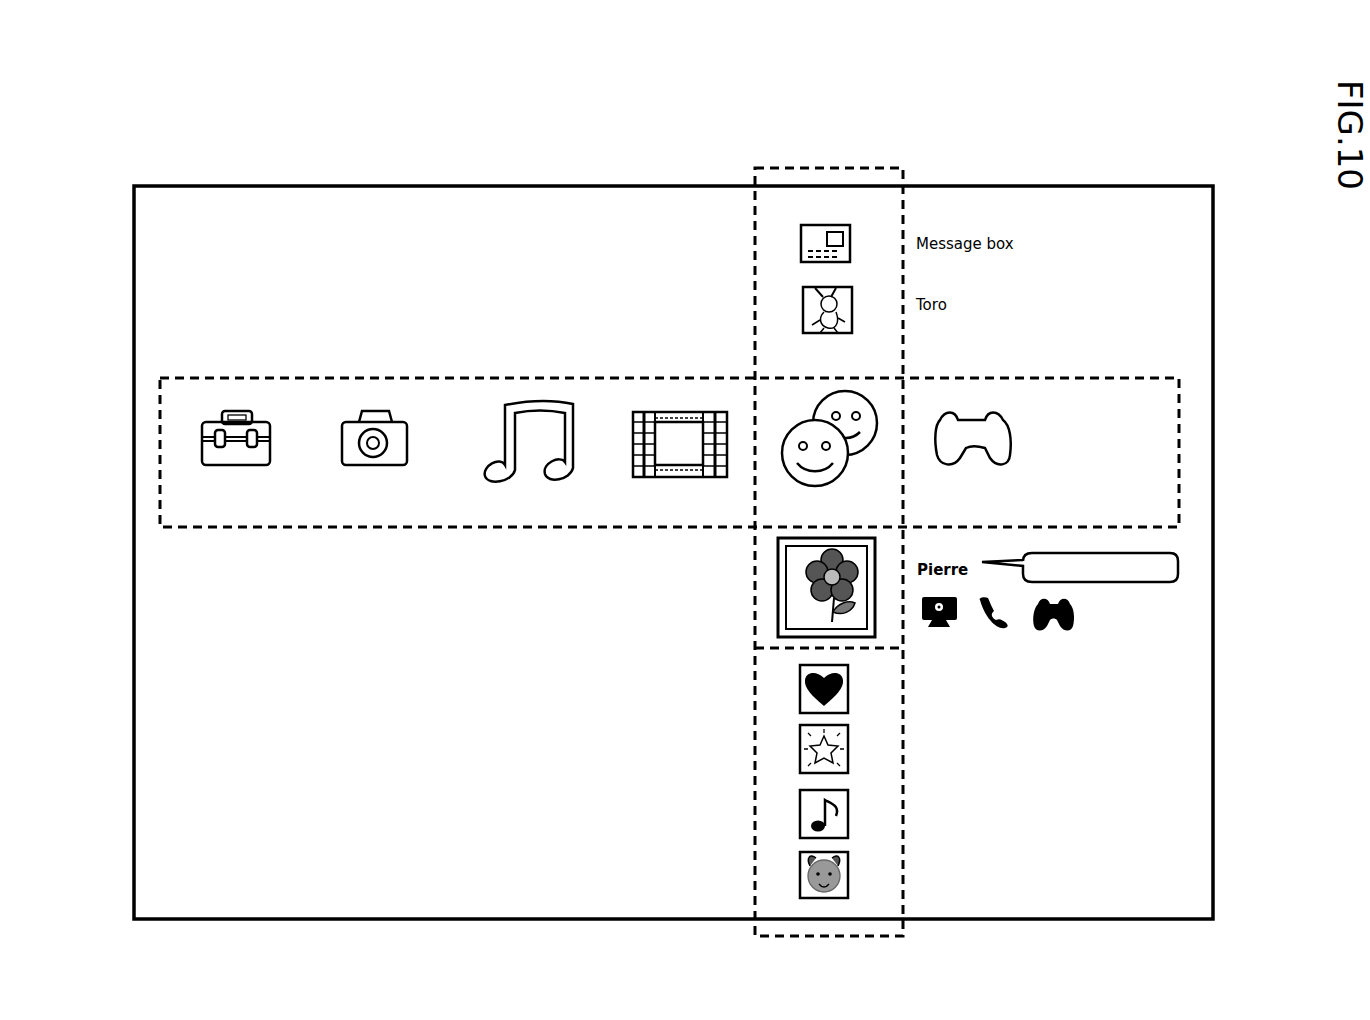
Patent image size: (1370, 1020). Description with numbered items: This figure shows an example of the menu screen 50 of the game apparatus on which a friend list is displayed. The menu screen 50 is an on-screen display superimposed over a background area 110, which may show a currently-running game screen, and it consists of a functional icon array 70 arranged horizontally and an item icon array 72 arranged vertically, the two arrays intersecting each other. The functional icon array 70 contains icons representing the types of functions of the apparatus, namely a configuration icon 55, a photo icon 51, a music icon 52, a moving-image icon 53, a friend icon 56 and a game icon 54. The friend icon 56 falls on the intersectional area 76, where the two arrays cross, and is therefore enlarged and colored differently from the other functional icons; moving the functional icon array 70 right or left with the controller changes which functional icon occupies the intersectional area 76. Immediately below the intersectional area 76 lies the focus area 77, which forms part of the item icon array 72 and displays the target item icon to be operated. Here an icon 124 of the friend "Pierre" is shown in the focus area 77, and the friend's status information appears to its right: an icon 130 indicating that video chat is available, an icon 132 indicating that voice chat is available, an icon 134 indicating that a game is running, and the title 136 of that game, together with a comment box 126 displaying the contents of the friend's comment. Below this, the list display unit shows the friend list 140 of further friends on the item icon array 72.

The menu screen 50 is at (1097, 186).
The photo icon 51 is at (374, 466).
The music icon 52 is at (512, 476).
The moving-image icon 53 is at (680, 478).
The game icon 54 is at (972, 450).
The configuration icon 55 is at (237, 466).
The friend icon 56 is at (814, 406).
The functional icon array 70 is at (1192, 457).
The item icon array 72 is at (864, 160).
The intersectional area 76 is at (772, 388).
The focus area 77 is at (742, 620).
The background area 110 is at (1180, 344).
The icon of a friend 124 is at (778, 551).
The comment box 126 is at (1178, 580).
The icon indicating video chat availability 130 is at (950, 628).
The icon indicating voice chat availability 132 is at (1004, 628).
The icon indicating a running game 134 is at (1068, 630).
The title of the game 136 is at (1140, 627).
The friend list 140 is at (997, 682).